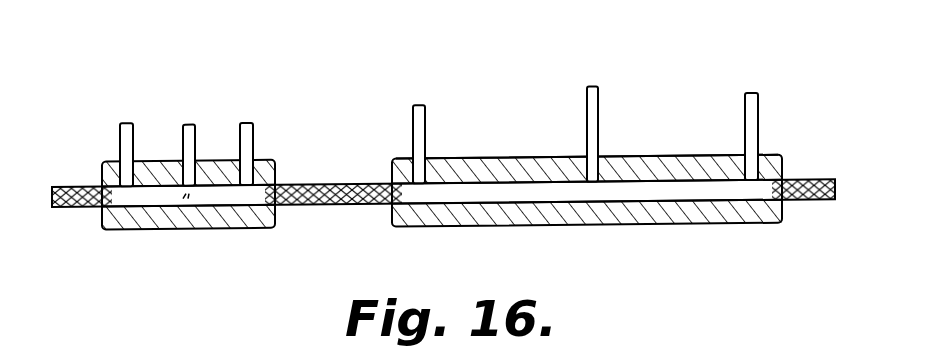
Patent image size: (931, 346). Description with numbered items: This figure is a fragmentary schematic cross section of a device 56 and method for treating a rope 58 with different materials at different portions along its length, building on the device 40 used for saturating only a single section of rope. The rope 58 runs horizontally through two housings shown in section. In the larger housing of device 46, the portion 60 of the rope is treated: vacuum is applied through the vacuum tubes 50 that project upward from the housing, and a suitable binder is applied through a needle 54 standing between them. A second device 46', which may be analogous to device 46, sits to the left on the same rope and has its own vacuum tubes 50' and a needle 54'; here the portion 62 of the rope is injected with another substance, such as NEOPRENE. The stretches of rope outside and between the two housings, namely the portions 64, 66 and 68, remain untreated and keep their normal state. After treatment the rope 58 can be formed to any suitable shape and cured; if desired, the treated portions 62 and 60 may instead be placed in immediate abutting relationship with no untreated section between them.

The device 40 is at (636, 102).
The housing 46 is at (587, 210).
The another device 46' is at (188, 218).
The vacuum tubes 50 is at (585, 132).
The vacuum tubes 50' is at (182, 144).
The needle 54 is at (622, 134).
The needle 54' is at (166, 135).
The device 56 is at (356, 130).
The rope 58 is at (813, 180).
The portion of the rope 60 is at (511, 158).
The portion of the rope 62 is at (165, 200).
The portion of the rope 64 is at (68, 210).
The portion of the rope 66 is at (327, 210).
The portion of the rope 68 is at (805, 199).